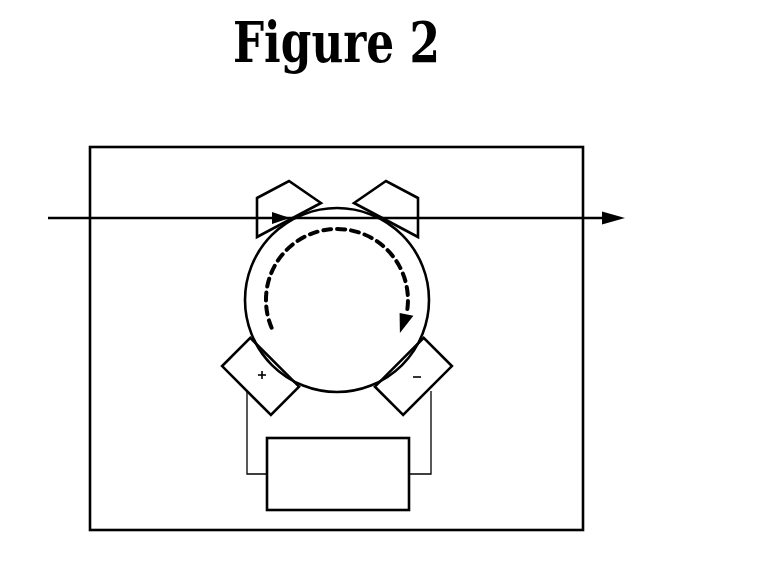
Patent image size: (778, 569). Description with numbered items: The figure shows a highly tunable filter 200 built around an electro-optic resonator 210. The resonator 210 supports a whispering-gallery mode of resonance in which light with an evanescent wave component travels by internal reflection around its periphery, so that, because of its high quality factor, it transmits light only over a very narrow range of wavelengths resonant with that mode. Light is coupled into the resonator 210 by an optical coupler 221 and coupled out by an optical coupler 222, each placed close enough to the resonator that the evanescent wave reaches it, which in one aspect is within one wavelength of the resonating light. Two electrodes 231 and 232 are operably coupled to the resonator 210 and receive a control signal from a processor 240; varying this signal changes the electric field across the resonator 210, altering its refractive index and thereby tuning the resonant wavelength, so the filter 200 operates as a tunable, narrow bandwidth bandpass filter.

The tunable filter 200 is at (400, 316).
The electro-optic resonator 210 is at (399, 300).
The optical coupler 221 is at (215, 169).
The optical coupler 222 is at (461, 169).
The electrode 231 is at (202, 392).
The electrode 232 is at (471, 392).
The processor 240 is at (338, 474).